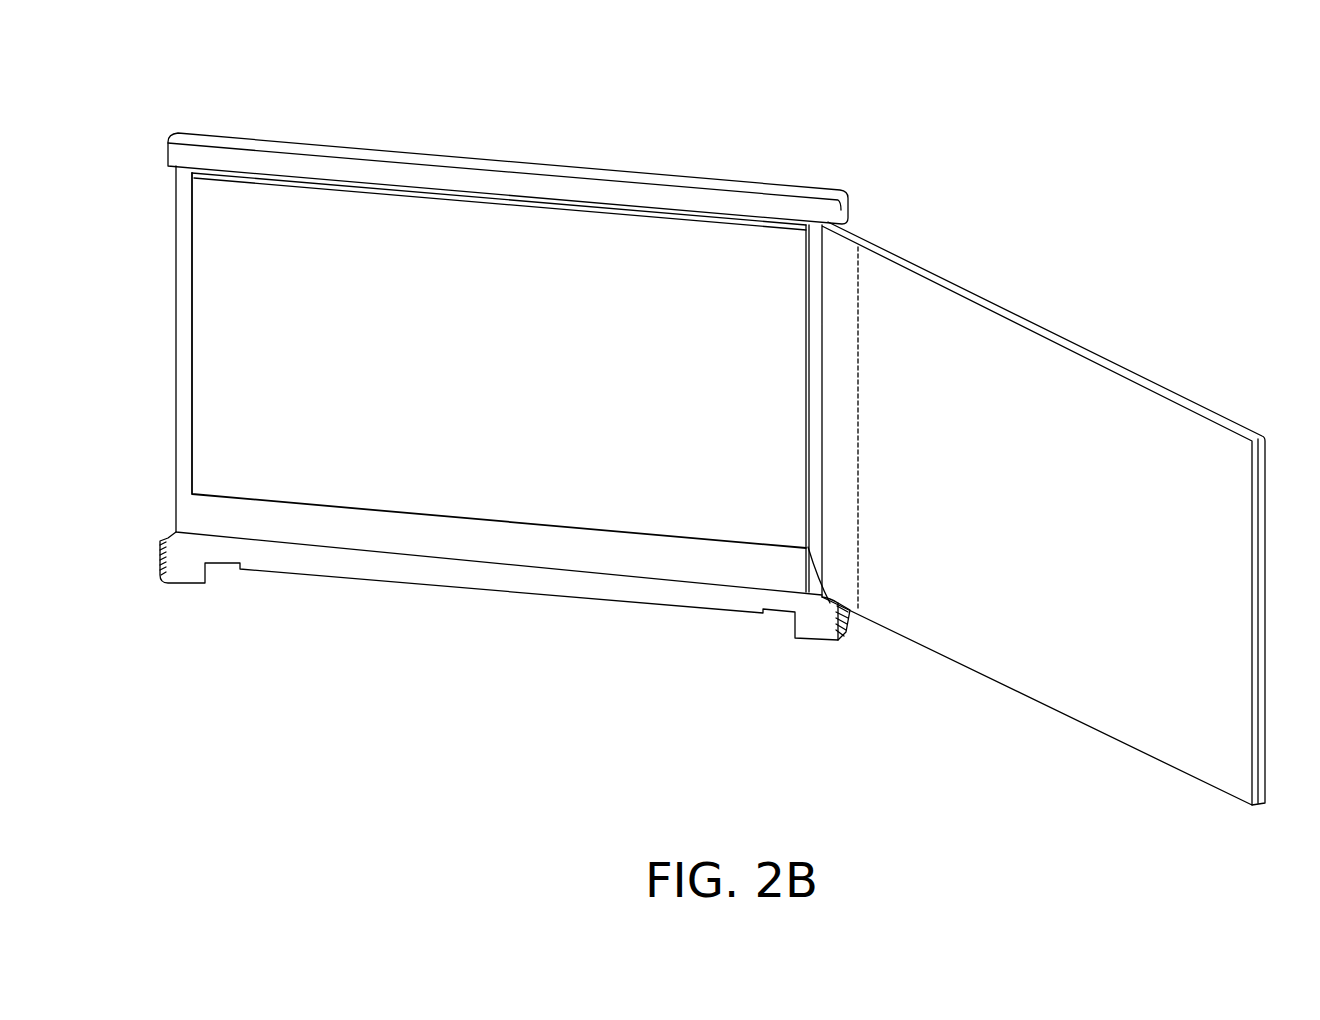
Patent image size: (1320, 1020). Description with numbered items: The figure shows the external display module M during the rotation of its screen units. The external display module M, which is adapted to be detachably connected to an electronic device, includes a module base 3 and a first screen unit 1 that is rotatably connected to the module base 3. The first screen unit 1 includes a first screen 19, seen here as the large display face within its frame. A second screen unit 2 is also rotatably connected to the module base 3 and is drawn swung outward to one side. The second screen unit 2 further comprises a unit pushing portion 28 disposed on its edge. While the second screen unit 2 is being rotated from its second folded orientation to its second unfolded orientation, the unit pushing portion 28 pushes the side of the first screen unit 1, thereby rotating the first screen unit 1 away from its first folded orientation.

The external display module M is at (165, 80).
The first screen unit 1 is at (512, 540).
The second screen unit 2 is at (955, 285).
The module base 3 is at (481, 180).
The first screen 19 is at (405, 487).
The unit pushing portion 28 is at (830, 603).